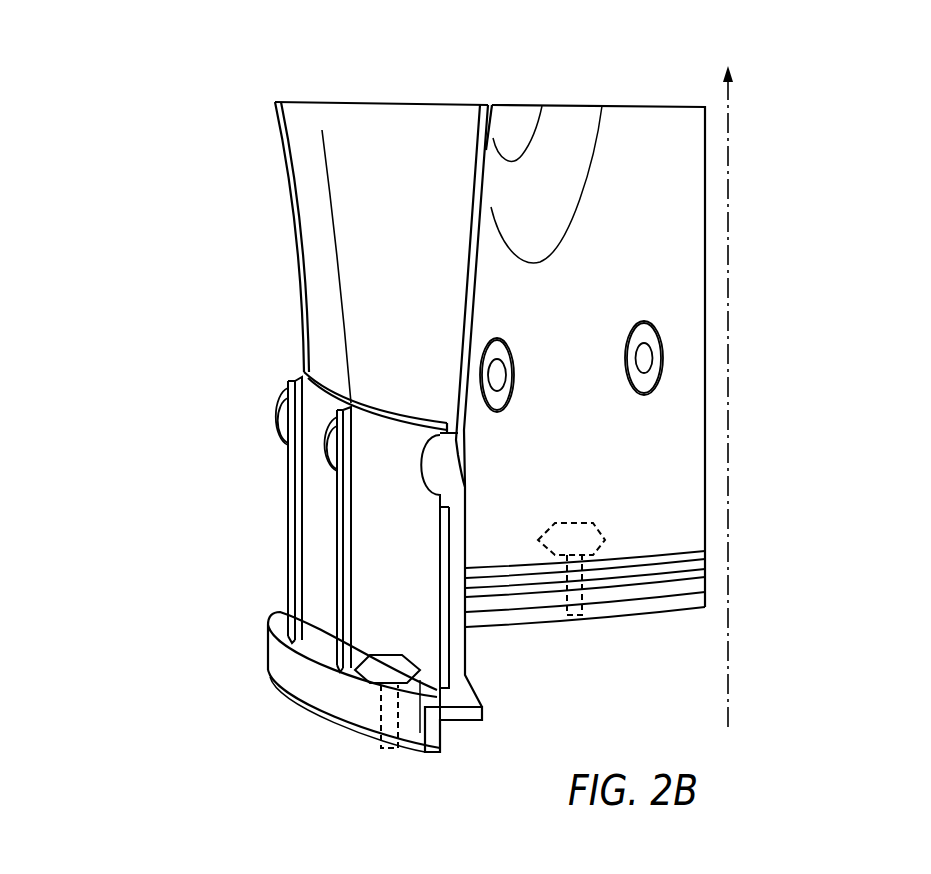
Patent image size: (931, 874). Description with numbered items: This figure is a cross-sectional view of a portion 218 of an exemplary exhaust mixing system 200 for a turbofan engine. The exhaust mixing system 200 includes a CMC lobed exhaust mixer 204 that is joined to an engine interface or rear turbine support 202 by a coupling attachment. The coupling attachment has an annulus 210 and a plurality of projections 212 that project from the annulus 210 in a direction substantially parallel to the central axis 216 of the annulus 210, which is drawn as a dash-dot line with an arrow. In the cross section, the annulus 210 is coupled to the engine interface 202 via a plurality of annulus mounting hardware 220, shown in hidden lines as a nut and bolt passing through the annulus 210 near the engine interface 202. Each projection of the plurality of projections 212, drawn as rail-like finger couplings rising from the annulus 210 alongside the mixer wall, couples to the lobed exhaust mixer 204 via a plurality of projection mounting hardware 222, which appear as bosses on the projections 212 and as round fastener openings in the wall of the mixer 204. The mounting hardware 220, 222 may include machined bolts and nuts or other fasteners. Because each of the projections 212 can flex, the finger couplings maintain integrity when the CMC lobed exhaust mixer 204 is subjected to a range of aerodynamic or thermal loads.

The exhaust mixing system 200 is at (146, 462).
The engine interface 202 is at (470, 722).
The lobed exhaust mixer 204 is at (289, 203).
The annulus 210 is at (318, 690).
The projections 212 is at (337, 575).
The central axis 216 is at (729, 705).
The portion 218 is at (145, 89).
The annulus mounting hardware 220 is at (442, 727).
The projection mounting hardware 222 is at (322, 422).